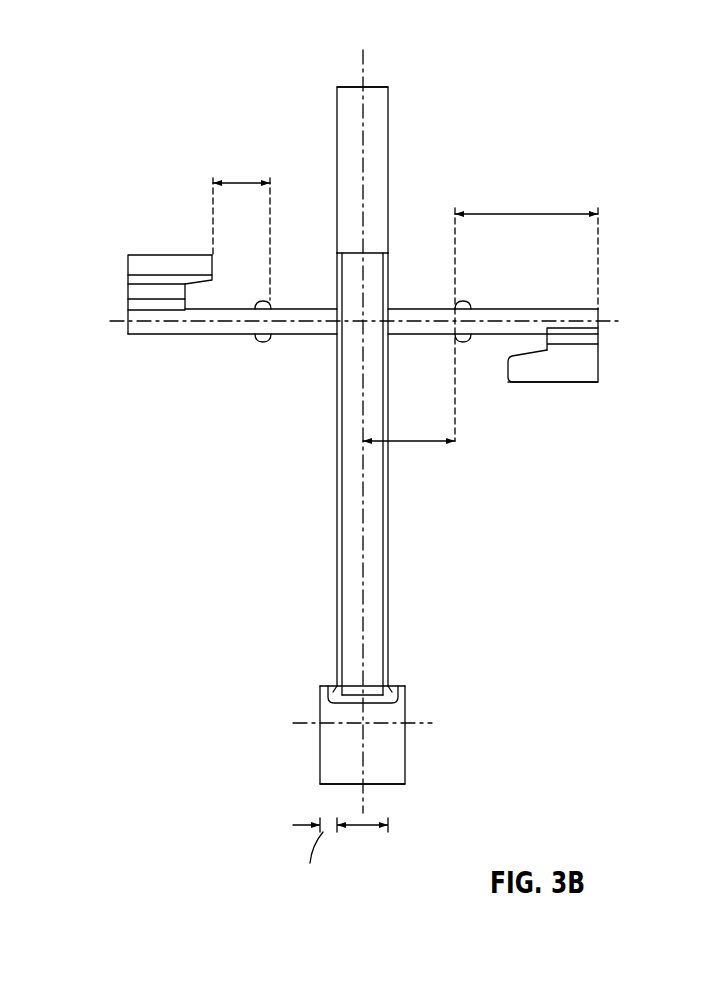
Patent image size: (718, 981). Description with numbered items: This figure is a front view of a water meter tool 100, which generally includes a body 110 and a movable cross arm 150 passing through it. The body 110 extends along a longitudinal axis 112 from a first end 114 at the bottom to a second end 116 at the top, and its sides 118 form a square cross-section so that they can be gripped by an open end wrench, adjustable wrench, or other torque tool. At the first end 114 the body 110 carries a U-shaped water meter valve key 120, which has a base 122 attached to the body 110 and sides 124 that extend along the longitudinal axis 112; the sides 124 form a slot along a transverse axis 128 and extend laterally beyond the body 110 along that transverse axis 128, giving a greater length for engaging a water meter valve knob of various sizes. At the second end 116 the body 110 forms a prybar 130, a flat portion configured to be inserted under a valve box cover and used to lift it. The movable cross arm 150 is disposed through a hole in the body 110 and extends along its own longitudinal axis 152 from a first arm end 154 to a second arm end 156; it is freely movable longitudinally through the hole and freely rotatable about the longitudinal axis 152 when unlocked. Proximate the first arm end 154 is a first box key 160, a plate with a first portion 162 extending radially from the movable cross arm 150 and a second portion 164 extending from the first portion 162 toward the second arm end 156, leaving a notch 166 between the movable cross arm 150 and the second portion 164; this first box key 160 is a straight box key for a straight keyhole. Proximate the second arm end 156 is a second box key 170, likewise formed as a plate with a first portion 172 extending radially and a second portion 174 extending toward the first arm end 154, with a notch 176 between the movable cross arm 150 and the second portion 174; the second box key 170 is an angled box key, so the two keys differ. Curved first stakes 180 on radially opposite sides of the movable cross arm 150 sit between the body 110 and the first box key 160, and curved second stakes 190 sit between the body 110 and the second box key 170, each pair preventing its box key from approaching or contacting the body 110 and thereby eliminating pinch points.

The water meter tool 100 is at (562, 68).
The body 110 is at (346, 357).
The longitudinal axis 112 is at (366, 72).
The first end 114 is at (391, 786).
The second end 116 is at (348, 86).
The sides 118 is at (374, 543).
The water meter valve key 120 is at (346, 743).
The base 122 is at (400, 694).
The sides 124 is at (396, 752).
The transverse axis 128 is at (297, 720).
The prybar 130 is at (376, 143).
The movable cross arm 150 is at (366, 345).
The longitudinal axis 152 is at (618, 322).
The first arm end 154 is at (600, 313).
The second arm end 156 is at (128, 328).
The first box key 160 is at (586, 363).
The first portion 162 is at (590, 365).
The second portion 164 is at (537, 368).
The notch 166 is at (530, 338).
The second box key 170 is at (129, 284).
The first portion 172 is at (128, 268).
The second portion 174 is at (203, 268).
The notch 176 is at (205, 298).
The first stakes 180 is at (465, 305).
The second stakes 190 is at (259, 314).